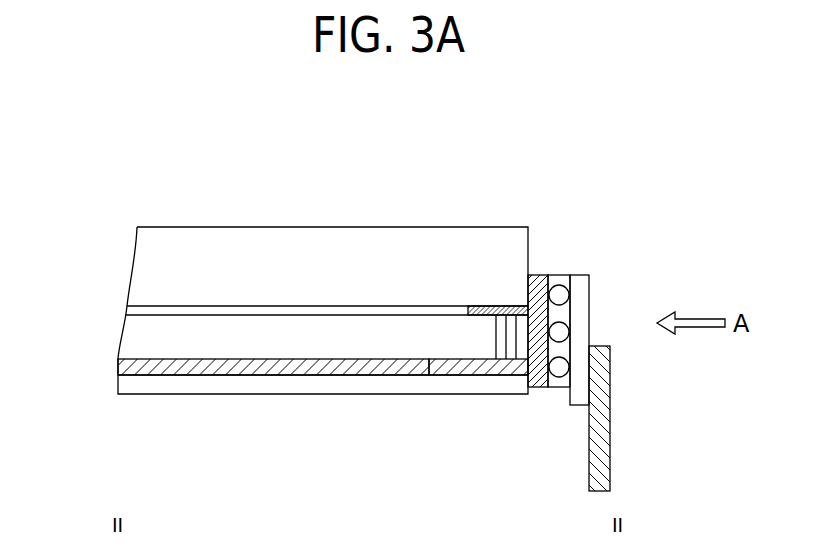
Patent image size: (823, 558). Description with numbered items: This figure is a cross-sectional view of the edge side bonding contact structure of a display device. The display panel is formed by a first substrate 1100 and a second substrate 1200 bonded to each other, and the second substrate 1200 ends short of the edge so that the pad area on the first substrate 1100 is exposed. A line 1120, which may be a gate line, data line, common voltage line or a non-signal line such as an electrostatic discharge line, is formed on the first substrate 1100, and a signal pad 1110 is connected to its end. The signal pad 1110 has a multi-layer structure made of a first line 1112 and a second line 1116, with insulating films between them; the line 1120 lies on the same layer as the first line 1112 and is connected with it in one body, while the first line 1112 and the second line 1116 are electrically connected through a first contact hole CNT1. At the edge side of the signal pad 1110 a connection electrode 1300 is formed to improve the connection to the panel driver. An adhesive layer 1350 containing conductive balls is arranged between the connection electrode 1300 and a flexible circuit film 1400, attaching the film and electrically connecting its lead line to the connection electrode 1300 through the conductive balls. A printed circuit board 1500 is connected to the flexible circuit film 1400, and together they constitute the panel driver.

The first substrate 1100 is at (138, 340).
The signal pad 1110 is at (323, 403).
The first line 1112 is at (443, 372).
The second line 1116 is at (493, 362).
The line 1120 is at (198, 372).
The second substrate 1200 is at (157, 270).
The connection electrode 1300 is at (539, 275).
The adhesive layer 1350 is at (565, 275).
The flexible circuit film 1400 is at (582, 307).
The printed circuit board 1500 is at (602, 423).
The first contact hole CNT1 is at (511, 325).